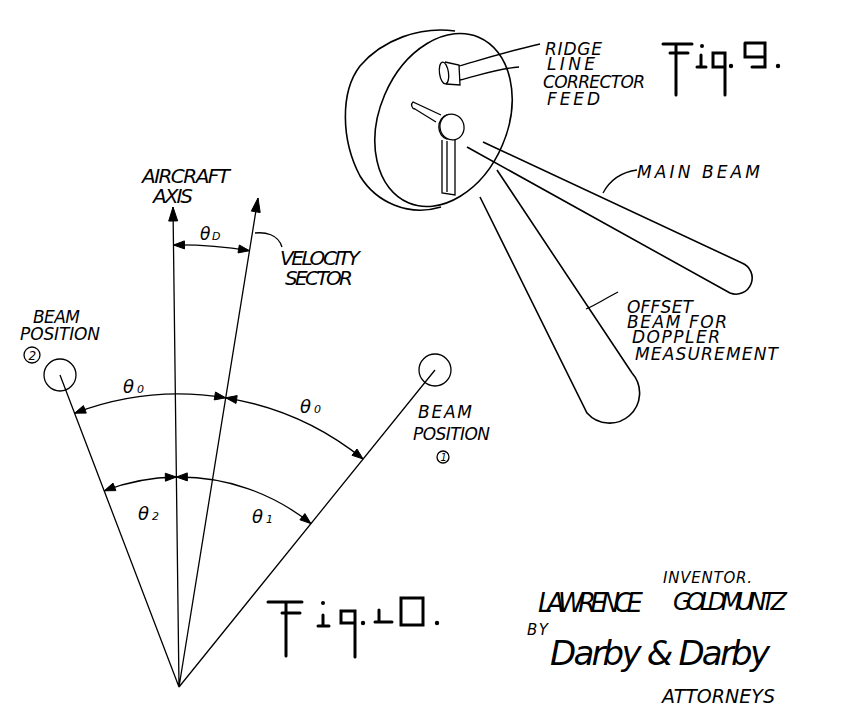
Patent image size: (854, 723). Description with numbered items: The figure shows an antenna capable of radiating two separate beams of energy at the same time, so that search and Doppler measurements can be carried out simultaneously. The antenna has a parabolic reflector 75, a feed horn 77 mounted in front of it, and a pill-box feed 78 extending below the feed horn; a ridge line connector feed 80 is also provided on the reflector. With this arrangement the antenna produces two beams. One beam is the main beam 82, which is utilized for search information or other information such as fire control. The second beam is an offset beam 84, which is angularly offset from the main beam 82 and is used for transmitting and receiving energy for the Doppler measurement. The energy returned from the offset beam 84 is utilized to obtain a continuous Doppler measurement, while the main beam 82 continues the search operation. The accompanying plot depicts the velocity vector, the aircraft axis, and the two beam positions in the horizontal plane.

The parabolic reflector 75 is at (355, 146).
The feed horn 77 is at (464, 127).
The pill-box feed 78 is at (448, 198).
The ridge line connector feed 80 is at (490, 64).
The main beam 82 is at (707, 247).
The offset beam 84 is at (615, 383).